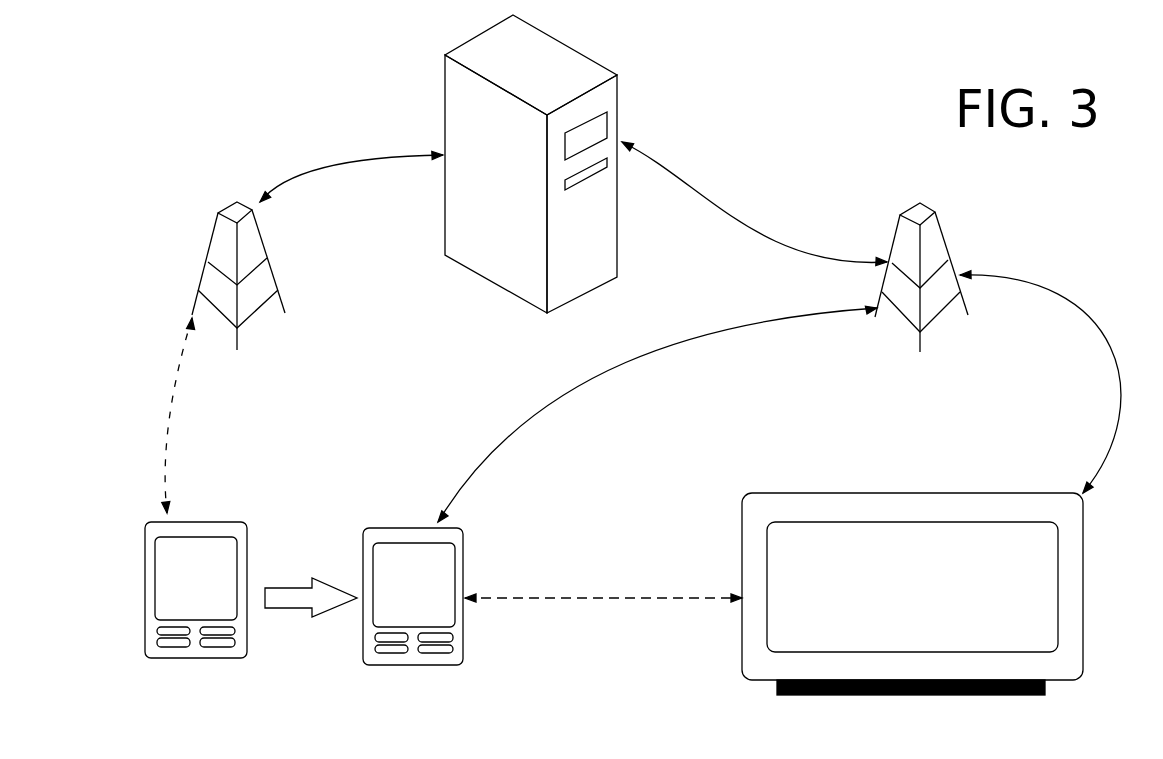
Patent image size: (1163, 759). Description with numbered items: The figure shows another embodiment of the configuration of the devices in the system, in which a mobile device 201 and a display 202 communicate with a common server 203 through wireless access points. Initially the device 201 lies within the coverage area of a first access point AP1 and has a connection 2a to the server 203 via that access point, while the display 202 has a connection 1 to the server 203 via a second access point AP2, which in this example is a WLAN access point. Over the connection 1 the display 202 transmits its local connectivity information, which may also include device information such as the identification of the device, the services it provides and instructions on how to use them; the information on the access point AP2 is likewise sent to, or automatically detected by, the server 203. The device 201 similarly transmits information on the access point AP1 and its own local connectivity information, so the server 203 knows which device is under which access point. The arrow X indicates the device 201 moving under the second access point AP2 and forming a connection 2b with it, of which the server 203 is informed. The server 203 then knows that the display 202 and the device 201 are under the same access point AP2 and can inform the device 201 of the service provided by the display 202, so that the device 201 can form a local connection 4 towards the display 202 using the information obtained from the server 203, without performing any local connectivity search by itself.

The device 201 is at (188, 660).
The display 202 is at (912, 594).
The server 203 is at (531, 164).
The first access point AP1 is at (238, 256).
The second access point AP2 is at (921, 259).
The connection 1 is at (1042, 382).
The connection 2a is at (171, 415).
The connection 2b is at (657, 414).
The local connection 4 is at (603, 585).
The arrow X is at (311, 583).